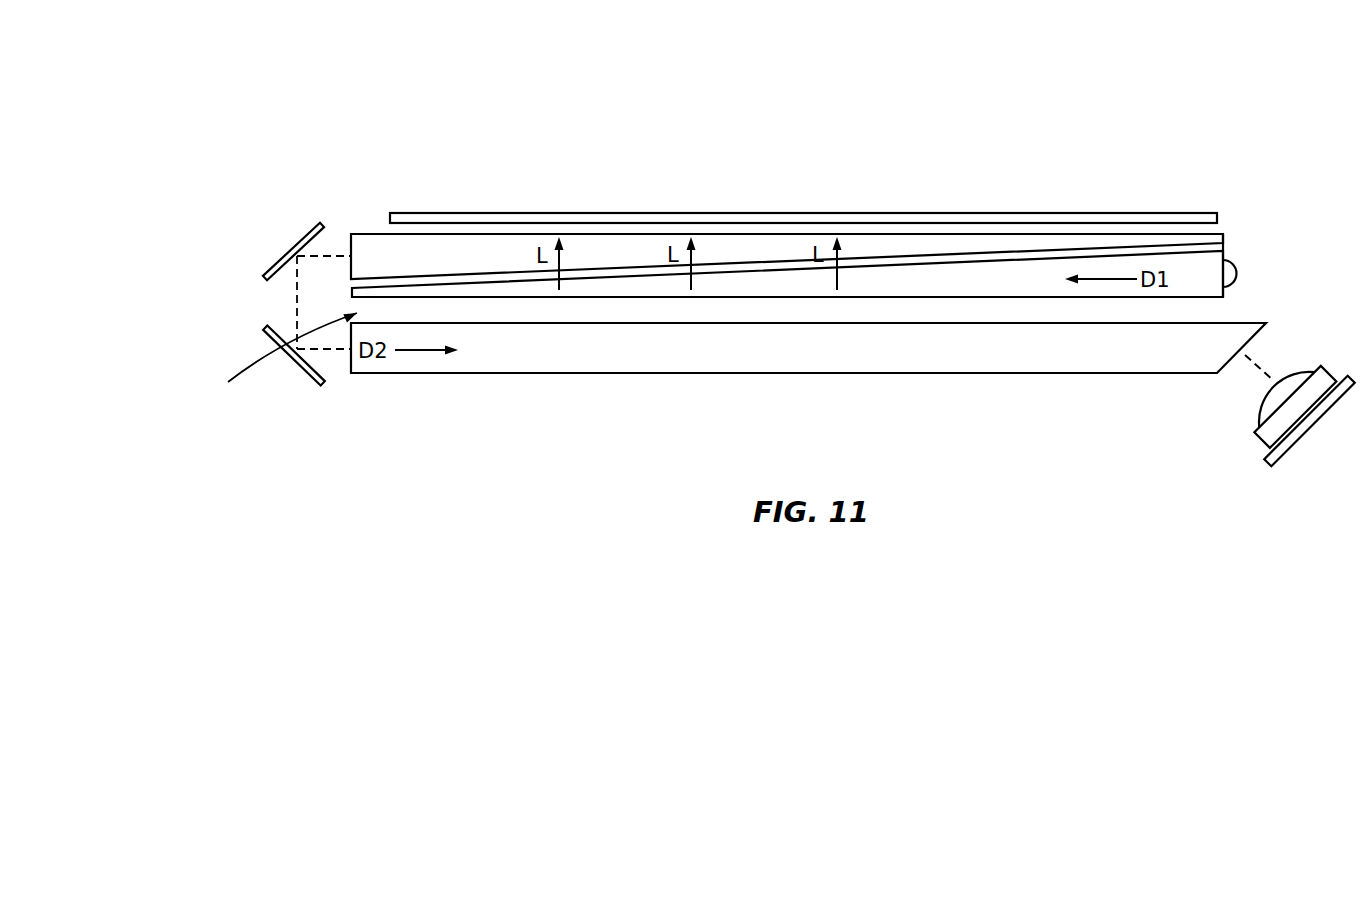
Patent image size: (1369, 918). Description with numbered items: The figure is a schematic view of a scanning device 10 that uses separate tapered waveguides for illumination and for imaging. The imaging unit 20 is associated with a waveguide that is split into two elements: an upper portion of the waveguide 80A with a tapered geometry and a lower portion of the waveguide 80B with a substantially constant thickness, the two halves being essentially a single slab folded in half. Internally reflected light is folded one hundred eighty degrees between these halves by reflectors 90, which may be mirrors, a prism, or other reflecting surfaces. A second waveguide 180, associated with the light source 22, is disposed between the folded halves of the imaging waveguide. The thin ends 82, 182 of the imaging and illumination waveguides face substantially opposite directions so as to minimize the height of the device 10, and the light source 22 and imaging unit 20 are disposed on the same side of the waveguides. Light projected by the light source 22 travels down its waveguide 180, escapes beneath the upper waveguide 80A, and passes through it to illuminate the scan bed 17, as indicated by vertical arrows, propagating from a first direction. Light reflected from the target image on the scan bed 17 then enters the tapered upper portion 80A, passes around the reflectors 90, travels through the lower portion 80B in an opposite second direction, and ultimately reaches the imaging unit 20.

The scanning device 10 is at (1107, 98).
The scan bed 17 is at (493, 213).
The imaging unit 20 is at (1257, 445).
The light source 22 is at (1240, 273).
The upper portion of the waveguide 80A is at (362, 234).
The lower portion of the waveguide 80B is at (380, 373).
The thin end 82 is at (1238, 230).
The reflectors 90 is at (267, 310).
The second waveguide 180 is at (1223, 250).
The thin end 182 is at (277, 364).